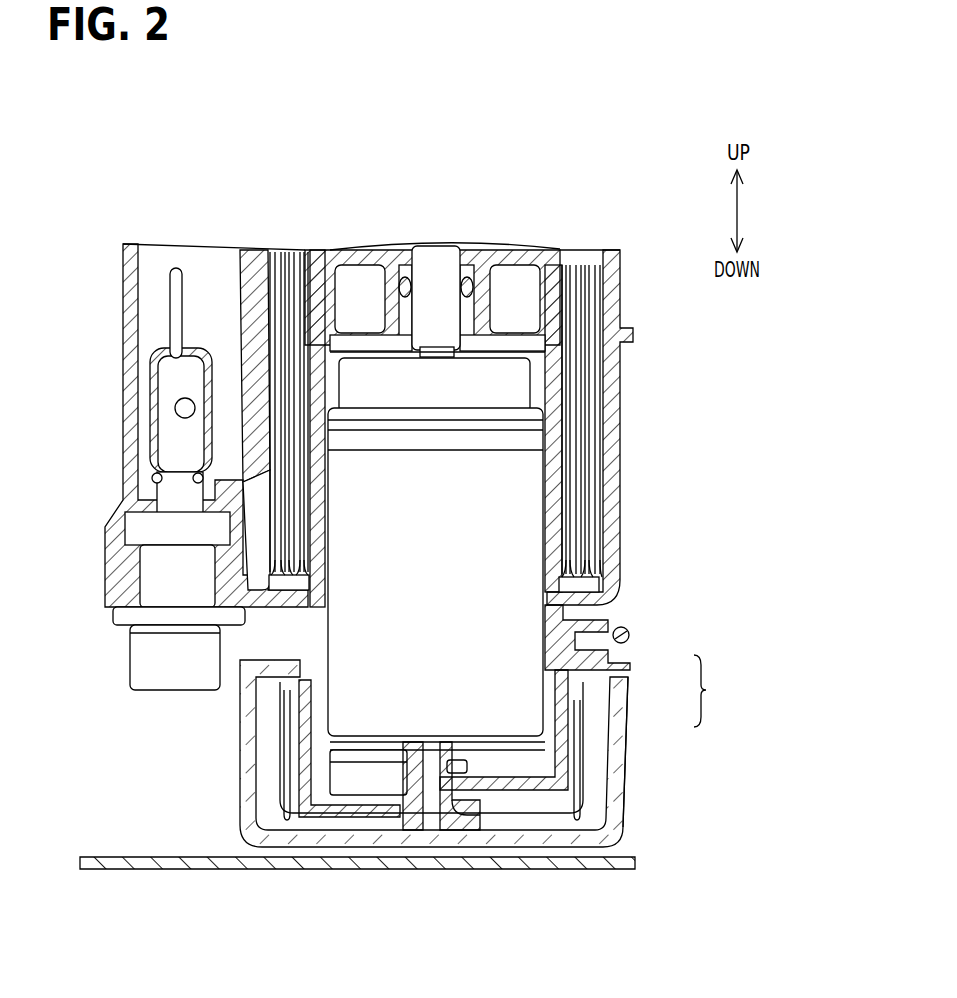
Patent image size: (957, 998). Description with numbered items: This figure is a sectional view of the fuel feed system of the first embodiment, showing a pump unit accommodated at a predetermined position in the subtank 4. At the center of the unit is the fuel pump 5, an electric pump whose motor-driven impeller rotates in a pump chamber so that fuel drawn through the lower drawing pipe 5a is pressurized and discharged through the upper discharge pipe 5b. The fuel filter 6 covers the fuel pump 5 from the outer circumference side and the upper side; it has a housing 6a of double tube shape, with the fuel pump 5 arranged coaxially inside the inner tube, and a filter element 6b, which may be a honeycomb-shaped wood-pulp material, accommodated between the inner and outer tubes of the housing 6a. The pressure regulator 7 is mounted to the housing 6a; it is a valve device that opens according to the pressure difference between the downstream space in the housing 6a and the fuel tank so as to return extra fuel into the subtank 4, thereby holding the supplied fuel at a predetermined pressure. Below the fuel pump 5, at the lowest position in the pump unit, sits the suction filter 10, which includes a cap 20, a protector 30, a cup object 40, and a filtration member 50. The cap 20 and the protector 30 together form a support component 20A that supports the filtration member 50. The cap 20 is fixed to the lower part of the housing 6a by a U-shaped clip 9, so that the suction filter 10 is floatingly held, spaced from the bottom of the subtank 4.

The subtank 4 is at (125, 869).
The fuel pump 5 is at (520, 527).
The lower drawing pipe 5a is at (355, 761).
The upper discharge pipe 5b is at (447, 262).
The fuel filter 6 is at (400, 456).
The housing 6a is at (612, 478).
The filter element 6b is at (586, 441).
The pressure regulator 7 is at (140, 676).
The clip 9 is at (630, 637).
The suction filter 10 is at (238, 807).
The cap 20 is at (630, 670).
The support component 20A is at (718, 691).
The protector 30 is at (600, 720).
The cup object 40 is at (580, 752).
The filtration member 50 is at (625, 801).